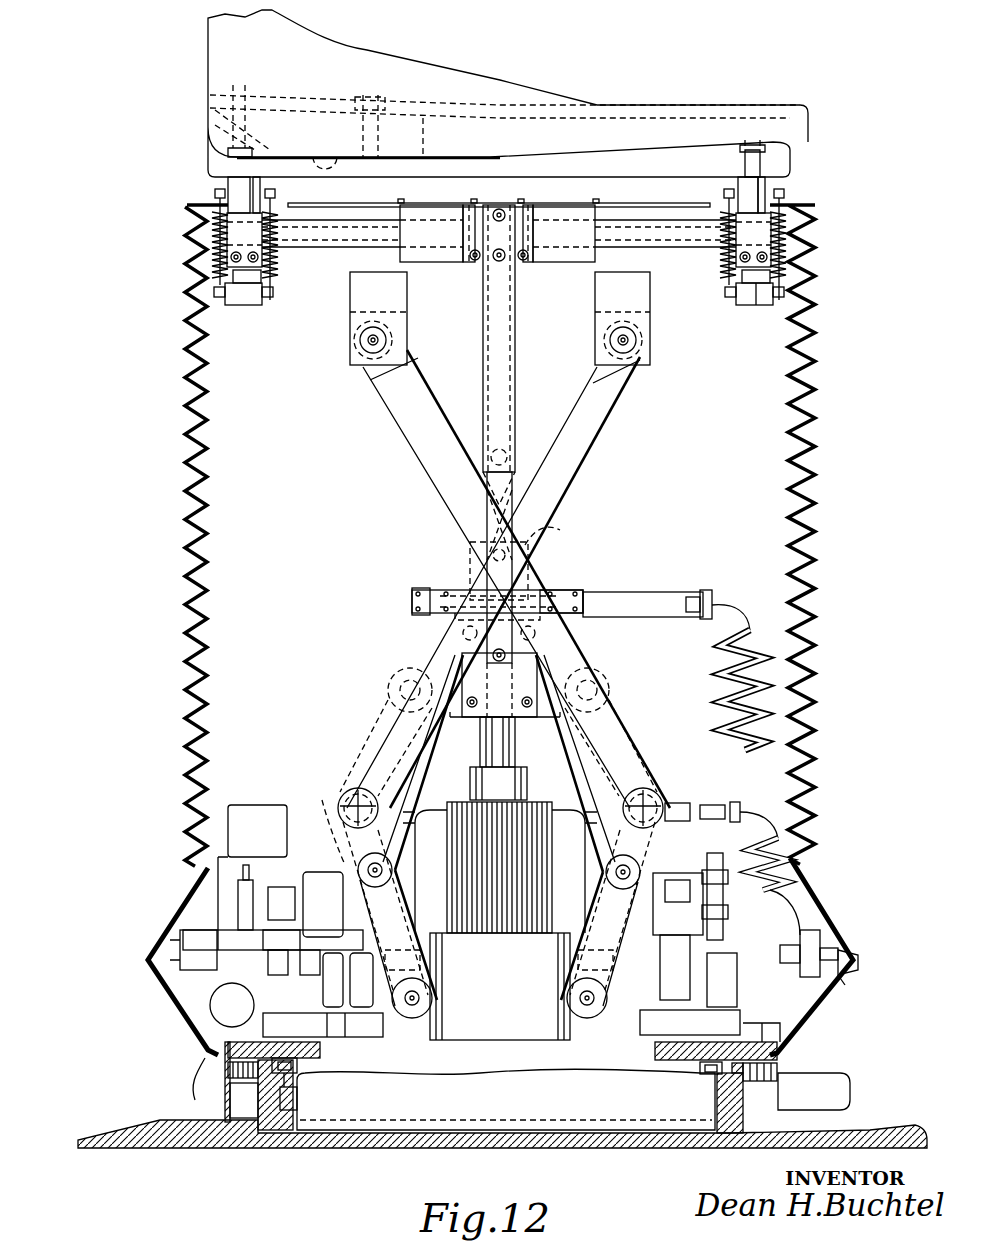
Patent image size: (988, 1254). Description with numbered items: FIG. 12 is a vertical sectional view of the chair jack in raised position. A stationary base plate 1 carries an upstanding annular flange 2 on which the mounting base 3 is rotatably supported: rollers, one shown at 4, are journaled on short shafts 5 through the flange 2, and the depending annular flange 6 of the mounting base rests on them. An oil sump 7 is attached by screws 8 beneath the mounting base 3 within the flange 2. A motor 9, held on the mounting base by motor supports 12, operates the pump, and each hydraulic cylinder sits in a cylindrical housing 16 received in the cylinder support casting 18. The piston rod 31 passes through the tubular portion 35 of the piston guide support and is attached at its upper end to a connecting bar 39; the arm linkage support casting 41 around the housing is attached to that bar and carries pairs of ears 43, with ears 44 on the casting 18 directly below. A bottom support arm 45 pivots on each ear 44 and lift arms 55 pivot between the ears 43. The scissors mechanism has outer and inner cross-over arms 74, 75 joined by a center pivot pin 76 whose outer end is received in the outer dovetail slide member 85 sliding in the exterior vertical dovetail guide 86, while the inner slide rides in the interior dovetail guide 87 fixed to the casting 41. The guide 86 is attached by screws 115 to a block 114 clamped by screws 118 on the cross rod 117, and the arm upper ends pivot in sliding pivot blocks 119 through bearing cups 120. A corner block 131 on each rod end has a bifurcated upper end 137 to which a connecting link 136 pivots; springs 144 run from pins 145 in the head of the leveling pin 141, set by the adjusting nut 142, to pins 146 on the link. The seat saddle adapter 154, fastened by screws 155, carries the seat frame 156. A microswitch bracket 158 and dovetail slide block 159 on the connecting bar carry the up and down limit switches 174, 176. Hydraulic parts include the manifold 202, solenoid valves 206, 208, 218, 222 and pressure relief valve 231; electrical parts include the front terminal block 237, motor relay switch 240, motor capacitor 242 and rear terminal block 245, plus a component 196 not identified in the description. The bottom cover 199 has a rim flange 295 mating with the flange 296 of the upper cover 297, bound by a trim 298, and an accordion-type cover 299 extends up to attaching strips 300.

The base plate 1 is at (177, 1137).
The upstanding annular flange 2 is at (717, 1100).
The mounting base 3 is at (780, 1058).
The roller 4 is at (245, 1105).
The short shaft 5 is at (272, 1102).
The depending annular flange 6 is at (230, 1095).
The oil sump 7 is at (358, 1105).
The screws 8 is at (298, 1078).
The motor 9 is at (420, 820).
The motor supports 12 is at (432, 1000).
The cylindrical housing 16 is at (520, 880).
The cylinder support casting 18 is at (485, 1001).
The piston rod 31 is at (506, 746).
The upright tubular portion 35 is at (522, 783).
The connecting bar 39 is at (464, 630).
The arm linkage support casting 41 is at (568, 618).
The ears 43 is at (400, 668).
The ears 44 is at (422, 1016).
The bottom support arm 45 is at (390, 888).
The lift arm 55 is at (390, 775).
The outer cross-over arm 74 is at (418, 448).
The inner cross-over arm 75 is at (572, 466).
The center pivot pin 76 is at (470, 552).
The outer dovetail slide member 85 is at (505, 568).
The exterior vertical dovetail guide 86 is at (503, 386).
The interior dovetail guide 87 is at (468, 690).
The block 114 is at (528, 240).
The screws 115 is at (497, 208).
The cross rod 117 is at (665, 248).
The screws 118 is at (472, 262).
The sliding pivot block 119 is at (360, 305).
The bearing cup 120 is at (428, 264).
The corner block 131 is at (240, 242).
The connecting link 136 is at (240, 187).
The bifurcated upper end 137 is at (258, 177).
The leveling pin 141 is at (250, 296).
The adjusting nut 142 is at (758, 296).
The springs 144 is at (218, 262).
The pins 145 is at (273, 294).
The pins 146 is at (276, 193).
The seat saddle adapter 154 is at (800, 150).
The screws 155 is at (770, 95).
The seat frame 156 is at (350, 52).
The microswitch bracket 158 is at (628, 592).
The dovetail slide block 159 is at (548, 532).
The left up limit switch 174 is at (552, 590).
The left down limit switch 176 is at (418, 615).
The box 196 is at (850, 1092).
The bottom cover 199 is at (782, 1031).
The manifold 202 is at (323, 1024).
The solenoid valve 206 is at (265, 888).
The solenoid valve 208 is at (318, 872).
The solenoid valve 218 is at (760, 905).
The solenoid valve 222 is at (660, 873).
The pressure relief valve 231 is at (325, 825).
The front terminal block 237 is at (195, 940).
The motor relay switch 240 is at (255, 805).
The motor capacitor 242 is at (210, 1002).
The rear terminal block 245 is at (820, 935).
The outturned rim flange 295 is at (848, 978).
The flange 296 is at (856, 955).
The upper cover 297 is at (812, 895).
The trim 298 is at (150, 965).
The accordion-type cover 299 is at (820, 612).
The attaching strips 300 is at (185, 210).